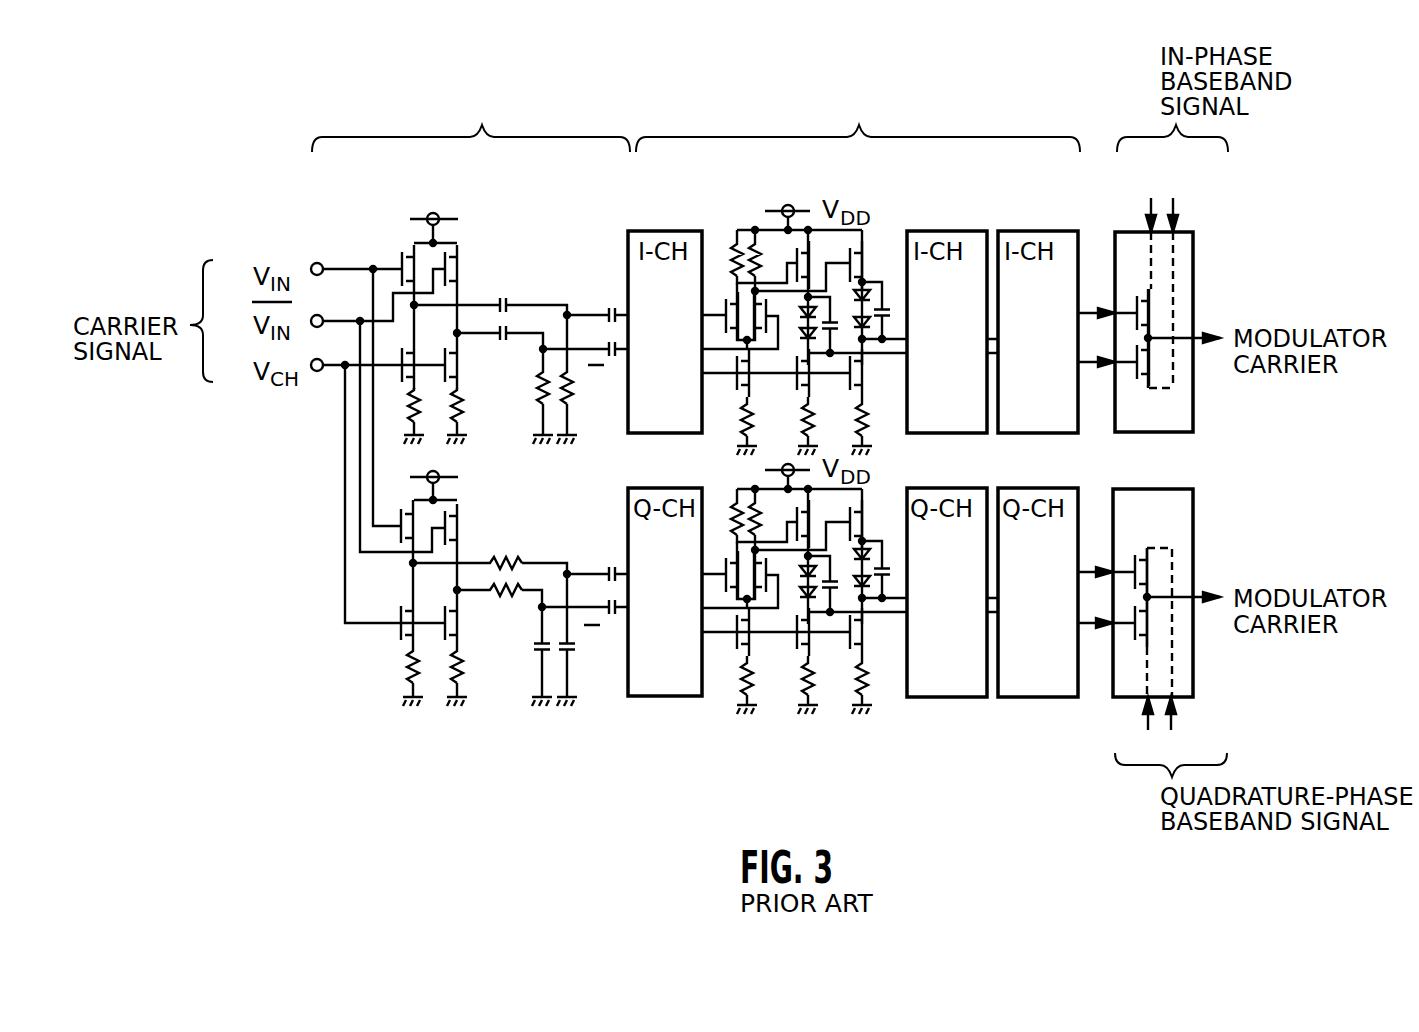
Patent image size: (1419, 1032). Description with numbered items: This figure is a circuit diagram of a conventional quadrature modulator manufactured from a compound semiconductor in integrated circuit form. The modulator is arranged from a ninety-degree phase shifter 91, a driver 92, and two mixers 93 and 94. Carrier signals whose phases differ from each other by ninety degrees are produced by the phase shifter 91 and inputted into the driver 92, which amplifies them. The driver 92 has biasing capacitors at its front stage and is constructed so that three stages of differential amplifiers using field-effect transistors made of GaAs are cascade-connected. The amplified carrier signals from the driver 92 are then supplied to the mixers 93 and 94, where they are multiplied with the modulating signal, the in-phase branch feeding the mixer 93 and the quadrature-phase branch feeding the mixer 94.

The 90-degree phase shifter 91 is at (471, 374).
The driver 92 is at (858, 391).
The mixer 93 is at (1190, 292).
The mixer 94 is at (1192, 565).